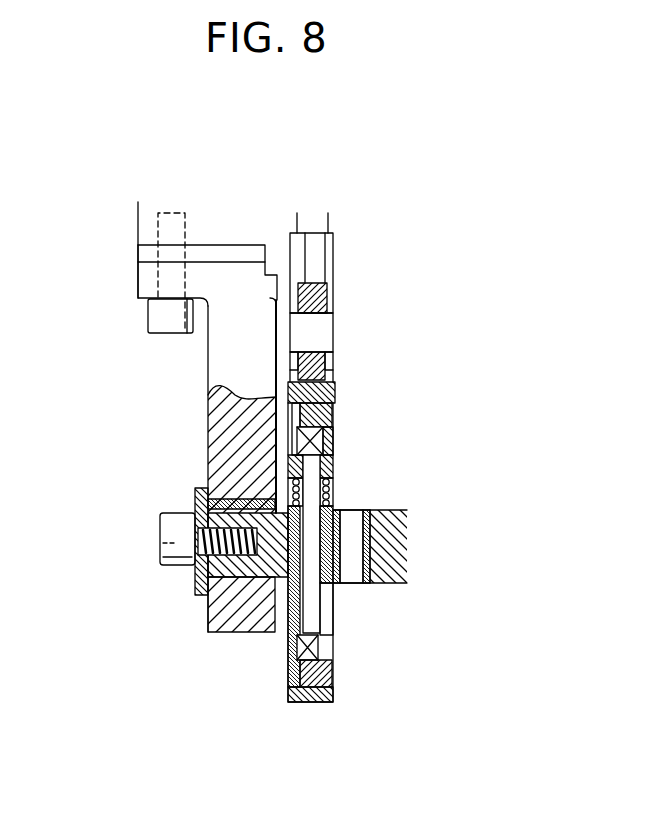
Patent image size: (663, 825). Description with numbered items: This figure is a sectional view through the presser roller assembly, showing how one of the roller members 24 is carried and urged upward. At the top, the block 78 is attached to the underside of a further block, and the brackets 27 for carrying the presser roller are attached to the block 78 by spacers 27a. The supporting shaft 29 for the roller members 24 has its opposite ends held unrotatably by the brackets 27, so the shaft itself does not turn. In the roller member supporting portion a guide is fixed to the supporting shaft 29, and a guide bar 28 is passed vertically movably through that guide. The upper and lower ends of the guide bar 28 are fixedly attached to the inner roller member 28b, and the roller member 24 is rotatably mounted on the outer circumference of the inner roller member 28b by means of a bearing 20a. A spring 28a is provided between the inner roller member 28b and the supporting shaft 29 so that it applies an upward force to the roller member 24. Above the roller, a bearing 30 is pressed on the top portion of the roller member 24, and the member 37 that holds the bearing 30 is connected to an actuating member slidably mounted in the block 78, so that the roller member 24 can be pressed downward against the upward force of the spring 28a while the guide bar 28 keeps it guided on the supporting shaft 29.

The block 78 is at (147, 228).
The spacers 27a is at (143, 252).
The bracket 27 is at (217, 417).
The member for holding the bearing 37 is at (328, 253).
The bearing 30 is at (327, 375).
The bearing 20a is at (327, 437).
The inner roller member 28b is at (328, 457).
The spring 28a is at (334, 490).
The guide bar 28 is at (307, 598).
The roller member 24 is at (320, 705).
The supporting shaft 29 is at (392, 580).